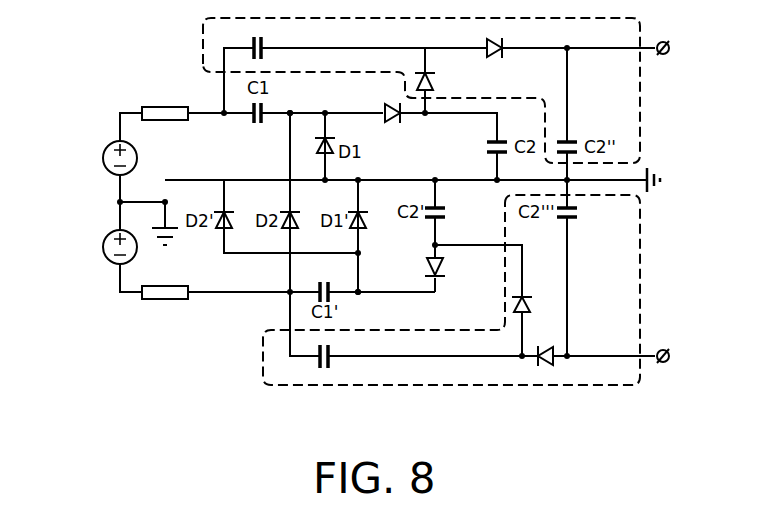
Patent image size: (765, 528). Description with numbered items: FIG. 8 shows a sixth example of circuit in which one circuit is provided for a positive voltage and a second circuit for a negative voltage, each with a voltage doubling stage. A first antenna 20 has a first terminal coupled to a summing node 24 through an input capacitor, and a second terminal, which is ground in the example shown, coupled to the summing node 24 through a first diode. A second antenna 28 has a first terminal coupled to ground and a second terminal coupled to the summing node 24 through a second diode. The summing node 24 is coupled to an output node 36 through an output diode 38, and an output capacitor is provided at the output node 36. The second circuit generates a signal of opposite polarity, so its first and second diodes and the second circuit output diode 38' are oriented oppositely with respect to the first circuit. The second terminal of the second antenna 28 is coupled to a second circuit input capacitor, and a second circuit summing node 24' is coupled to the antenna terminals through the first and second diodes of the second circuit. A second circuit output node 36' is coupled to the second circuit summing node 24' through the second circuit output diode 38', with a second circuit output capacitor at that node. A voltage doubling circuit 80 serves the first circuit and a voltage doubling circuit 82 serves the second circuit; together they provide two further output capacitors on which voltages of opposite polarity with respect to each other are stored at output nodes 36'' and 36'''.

The first antenna 20 is at (103, 158).
The second antenna 28 is at (103, 247).
The summing node 24 is at (266, 137).
The second circuit summing node 24' is at (383, 273).
The output diode 38 is at (391, 135).
The second circuit output diode 38' is at (460, 265).
The output node 36 is at (442, 123).
The second circuit output node 36' is at (463, 222).
The output node of voltage doubling circuit 36'' is at (598, 70).
The output node of voltage doubling circuit 36''' is at (601, 333).
The voltage doubling circuit 80 is at (642, 98).
The voltage doubling circuit 82 is at (642, 285).